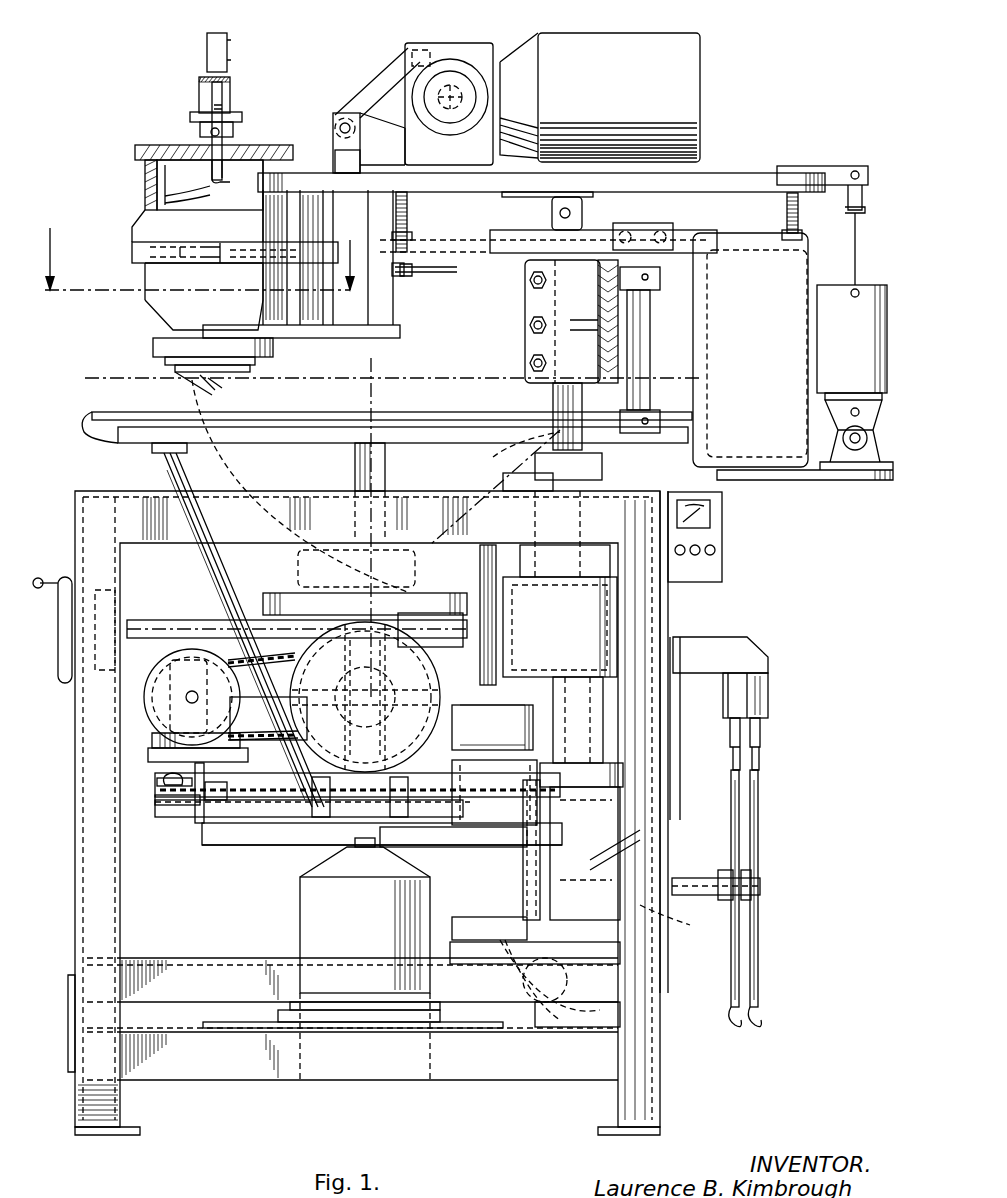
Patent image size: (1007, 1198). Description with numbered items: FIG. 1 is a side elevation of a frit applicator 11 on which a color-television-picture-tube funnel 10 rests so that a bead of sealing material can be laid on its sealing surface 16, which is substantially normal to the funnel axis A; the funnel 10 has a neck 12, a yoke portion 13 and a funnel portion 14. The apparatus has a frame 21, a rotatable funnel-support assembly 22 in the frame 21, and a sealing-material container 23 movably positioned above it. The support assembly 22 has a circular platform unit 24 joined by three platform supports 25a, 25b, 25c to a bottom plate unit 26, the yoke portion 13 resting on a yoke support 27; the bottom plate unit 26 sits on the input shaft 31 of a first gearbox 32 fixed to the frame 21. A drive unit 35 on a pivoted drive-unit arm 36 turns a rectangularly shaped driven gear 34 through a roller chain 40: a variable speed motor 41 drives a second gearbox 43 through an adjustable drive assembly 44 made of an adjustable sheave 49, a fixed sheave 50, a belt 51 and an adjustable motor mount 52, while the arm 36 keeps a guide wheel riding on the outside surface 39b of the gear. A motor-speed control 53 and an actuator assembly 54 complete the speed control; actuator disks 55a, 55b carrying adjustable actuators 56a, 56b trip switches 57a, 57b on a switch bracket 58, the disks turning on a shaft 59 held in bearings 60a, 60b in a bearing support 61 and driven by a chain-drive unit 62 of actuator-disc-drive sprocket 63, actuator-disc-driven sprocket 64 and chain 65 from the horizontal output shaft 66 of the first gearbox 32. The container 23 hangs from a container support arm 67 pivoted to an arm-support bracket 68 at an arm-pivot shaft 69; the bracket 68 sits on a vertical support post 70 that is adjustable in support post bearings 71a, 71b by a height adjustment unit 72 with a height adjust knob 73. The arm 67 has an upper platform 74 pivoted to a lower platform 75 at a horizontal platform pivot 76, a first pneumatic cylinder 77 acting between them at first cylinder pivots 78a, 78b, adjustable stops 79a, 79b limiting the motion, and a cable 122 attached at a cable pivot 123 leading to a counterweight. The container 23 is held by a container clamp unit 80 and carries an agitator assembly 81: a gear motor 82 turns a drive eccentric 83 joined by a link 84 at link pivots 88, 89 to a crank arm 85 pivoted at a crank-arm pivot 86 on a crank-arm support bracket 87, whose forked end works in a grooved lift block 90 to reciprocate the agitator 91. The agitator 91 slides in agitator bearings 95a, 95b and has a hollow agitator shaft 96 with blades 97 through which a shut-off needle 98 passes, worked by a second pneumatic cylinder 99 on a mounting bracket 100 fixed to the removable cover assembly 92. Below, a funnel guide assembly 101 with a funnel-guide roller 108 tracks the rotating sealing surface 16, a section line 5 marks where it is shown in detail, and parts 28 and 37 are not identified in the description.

The section line 5- 5 is at (197, 248).
The color-television-picture-tube funnel 10 is at (185, 386).
The frit applicator 11 is at (77, 826).
The neck 12 is at (365, 697).
The yoke portion 13 is at (300, 572).
The funnel portion 14 is at (165, 462).
The sealing surface 16 is at (392, 375).
The frame 21 is at (75, 748).
The rotatable funnel-support assembly 22 is at (210, 589).
The sealing-material container 23 is at (163, 310).
The circular platform unit 24 is at (92, 415).
The platform support 25a is at (210, 567).
The platform support 25b is at (355, 467).
The platform support 25c is at (488, 552).
The bottom plate unit 26 is at (172, 790).
The yoke support 27 is at (393, 570).
The drive motor 28 is at (267, 718).
The input shaft 31 is at (340, 856).
The first gearbox 32 is at (318, 915).
The rectangularly shaped driven gear 34 is at (185, 808).
The drive unit 35 is at (147, 758).
The drive-unit arm 36 is at (245, 850).
The cross plate 37 is at (555, 770).
The outside surface 39b is at (170, 840).
The roller chain 40 is at (162, 798).
The variable speed motor 41 is at (405, 718).
The second gearbox 43 is at (150, 742).
The adjustable drive assembly 44 is at (216, 863).
The adjustable sheave 49 is at (385, 697).
The fixed sheave 50 is at (162, 706).
The belt 51 is at (228, 665).
The adjustable motor mount 52 is at (208, 822).
The motor-speed control 53 is at (724, 532).
The actuator assembly 54 is at (759, 903).
The actuator disk 55a is at (759, 975).
The actuator disk 55b is at (731, 975).
The adjustable actuator 56a is at (756, 1027).
The adjustable actuator 56b is at (732, 1027).
The switch 57a is at (765, 690).
The switch 57b is at (728, 700).
The switch bracket 58 is at (738, 652).
The shaft 59 is at (690, 876).
The bearing 60a is at (665, 918).
The bearing 60b is at (586, 848).
The bearing support 61 is at (610, 845).
The chain-drive unit 62 is at (525, 1022).
The actuator-disc-drive sprocket 63 is at (535, 972).
The actuator-disc-driven sprocket 64 is at (542, 855).
The chain 65 is at (540, 1025).
The horizontal output shaft 66 is at (520, 912).
The container support arm 67 is at (730, 172).
The arm-support bracket 68 is at (522, 340).
The arm-pivot shaft 69 is at (650, 362).
The vertical support post 70 is at (540, 397).
The support post bearing 71a is at (525, 448).
The support post bearing 71b is at (562, 983).
The height adjustment unit 72 is at (600, 630).
The height adjust knob 73 is at (62, 660).
The upper platform 74 is at (773, 168).
The lower platform 75 is at (712, 242).
The horizontal platform pivot 76 is at (572, 213).
The first pneumatic cylinder 77 is at (862, 292).
The first cylinder pivot 78a is at (860, 170).
The first cylinder pivot 78b is at (850, 470).
The adjustable stop 79a is at (787, 211).
The adjustable stop 79b is at (410, 212).
The container clamp unit 80 is at (152, 250).
The agitator assembly 81 is at (405, 127).
The gear motor 82 is at (690, 92).
The drive eccentric 83 is at (460, 58).
The link 84 is at (447, 85).
The crank arm 85 is at (378, 82).
The crank-arm pivot 86 is at (343, 120).
The crank-arm support bracket 87 is at (334, 153).
The link pivot 88 is at (440, 112).
The link pivot 89 is at (412, 58).
The grooved lift block 90 is at (193, 117).
The agitator 91 is at (165, 186).
The removable cover assembly 92 is at (138, 150).
The agitator bearing 95a is at (210, 108).
The agitator bearing 95b is at (228, 165).
The hollow agitator shaft 96 is at (147, 168).
The blades 97 is at (172, 200).
The sealing-material shut-off needle 98 is at (224, 96).
The second pneumatic cylinder 99 is at (205, 42).
The second pneumatic cylinder-mounting bracket 100 is at (232, 82).
The funnel guide assembly 101 is at (153, 345).
The funnel-guide roller 108 is at (220, 388).
The cable 122 is at (456, 270).
The cable pivot 123 is at (405, 275).
The axis A is at (371, 360).